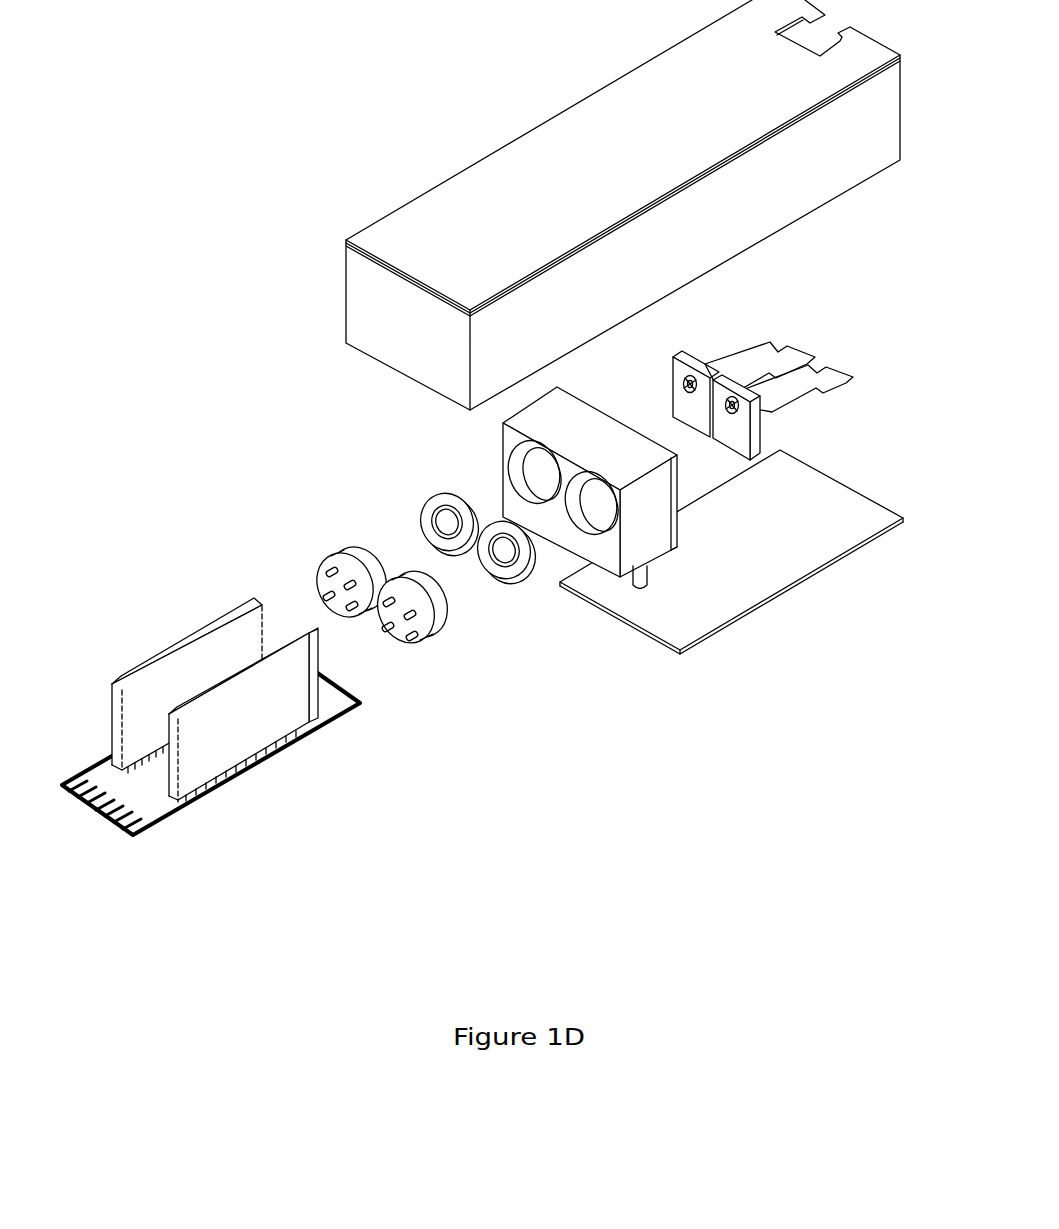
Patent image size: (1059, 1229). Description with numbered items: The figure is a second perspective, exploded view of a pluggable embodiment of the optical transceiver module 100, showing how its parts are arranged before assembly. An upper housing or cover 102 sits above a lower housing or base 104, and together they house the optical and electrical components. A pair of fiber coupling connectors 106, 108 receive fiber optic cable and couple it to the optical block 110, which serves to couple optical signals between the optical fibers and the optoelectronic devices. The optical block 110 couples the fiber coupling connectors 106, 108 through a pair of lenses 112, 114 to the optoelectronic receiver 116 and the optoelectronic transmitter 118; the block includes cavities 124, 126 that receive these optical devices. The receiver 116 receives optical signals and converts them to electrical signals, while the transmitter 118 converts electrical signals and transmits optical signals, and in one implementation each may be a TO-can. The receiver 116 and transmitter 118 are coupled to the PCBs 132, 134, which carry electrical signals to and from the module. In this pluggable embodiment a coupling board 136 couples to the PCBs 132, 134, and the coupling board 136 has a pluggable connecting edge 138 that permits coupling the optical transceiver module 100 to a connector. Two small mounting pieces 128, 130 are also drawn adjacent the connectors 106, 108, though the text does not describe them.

The optical transceiver module 100 is at (815, 750).
The upper housing or cover 102 is at (444, 177).
The lower housing or base 104 is at (782, 592).
The fiber coupling connector 106 is at (833, 366).
The fiber coupling connector 108 is at (779, 346).
The optical block 110 is at (581, 436).
The lens 112 is at (528, 568).
The lens 114 is at (433, 505).
The optoelectronic receiver 116 is at (437, 630).
The optoelectronic transmitter 118 is at (353, 550).
The cavity 124 is at (598, 518).
The cavity 126 is at (523, 466).
The mounting bracket 128 is at (739, 407).
The mounting bracket 130 is at (691, 377).
The PCB 132 is at (277, 740).
The PCB 134 is at (167, 651).
The coupling board 136 is at (362, 706).
The pluggable connecting edge 138 is at (97, 808).